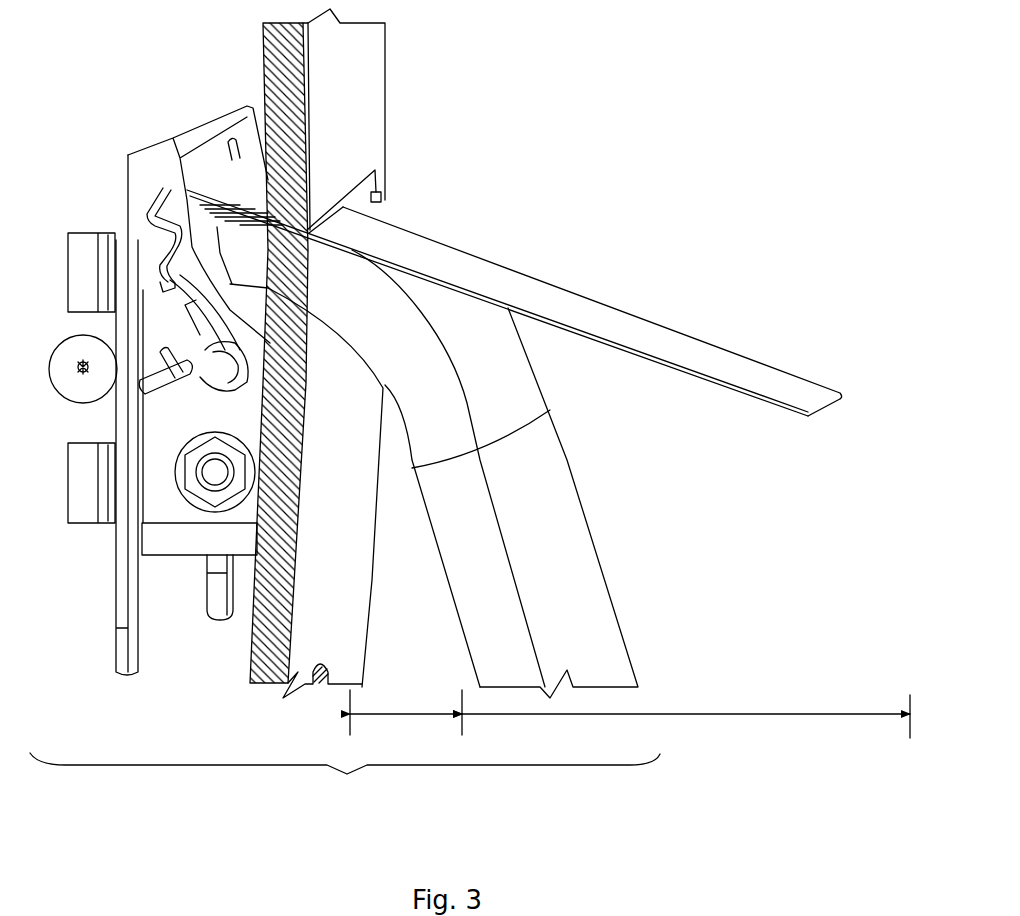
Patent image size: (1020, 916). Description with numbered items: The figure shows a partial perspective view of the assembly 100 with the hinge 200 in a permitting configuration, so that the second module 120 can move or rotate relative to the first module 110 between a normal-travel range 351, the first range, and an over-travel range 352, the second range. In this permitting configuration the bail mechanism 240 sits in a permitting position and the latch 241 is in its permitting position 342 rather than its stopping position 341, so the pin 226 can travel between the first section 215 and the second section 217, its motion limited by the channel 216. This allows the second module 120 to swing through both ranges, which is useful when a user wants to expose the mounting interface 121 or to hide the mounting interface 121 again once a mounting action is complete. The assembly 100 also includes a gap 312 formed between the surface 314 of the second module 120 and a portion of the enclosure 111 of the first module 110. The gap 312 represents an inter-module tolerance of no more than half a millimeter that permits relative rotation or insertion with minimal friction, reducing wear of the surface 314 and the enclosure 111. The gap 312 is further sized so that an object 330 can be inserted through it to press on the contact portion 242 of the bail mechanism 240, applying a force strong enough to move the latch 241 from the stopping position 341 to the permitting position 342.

The assembly 100 is at (345, 777).
The first module 110 is at (402, 119).
The enclosure 111 is at (373, 149).
The second module 120 is at (590, 499).
The mounting interface 121 is at (235, 220).
The hinge 200 is at (201, 672).
The first section 215 is at (187, 413).
The channel 216 is at (243, 363).
The second section 217 is at (238, 385).
The pin 226 is at (180, 366).
The bail mechanism 240 is at (175, 137).
The latch 241 is at (177, 285).
The contact portion 242 is at (190, 155).
The gap 312 is at (383, 197).
The surface 314 is at (358, 210).
The object 330 is at (553, 300).
The stopping position 341 is at (200, 376).
The permitting position 342 is at (160, 327).
The normal-travel range 351 is at (686, 716).
The over-travel range 352 is at (406, 713).